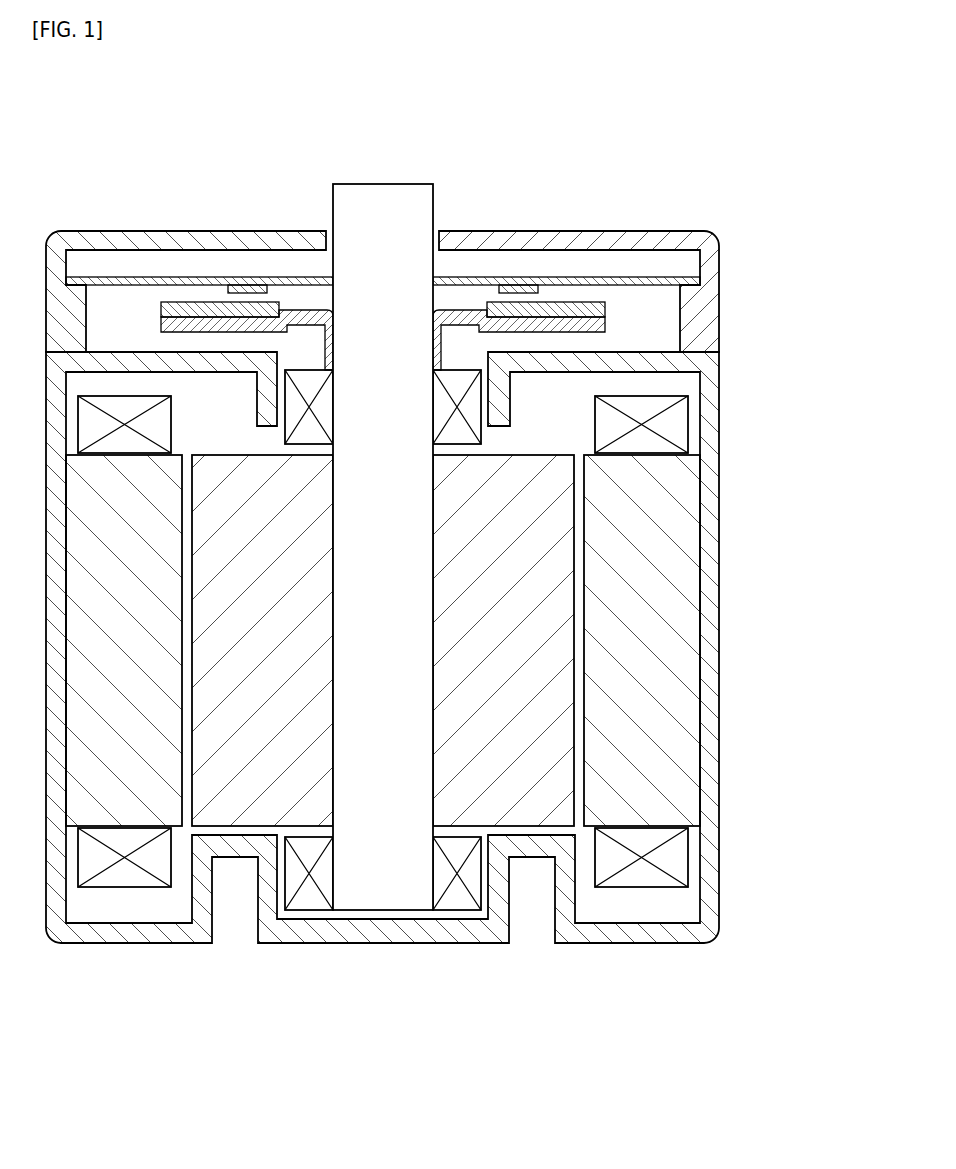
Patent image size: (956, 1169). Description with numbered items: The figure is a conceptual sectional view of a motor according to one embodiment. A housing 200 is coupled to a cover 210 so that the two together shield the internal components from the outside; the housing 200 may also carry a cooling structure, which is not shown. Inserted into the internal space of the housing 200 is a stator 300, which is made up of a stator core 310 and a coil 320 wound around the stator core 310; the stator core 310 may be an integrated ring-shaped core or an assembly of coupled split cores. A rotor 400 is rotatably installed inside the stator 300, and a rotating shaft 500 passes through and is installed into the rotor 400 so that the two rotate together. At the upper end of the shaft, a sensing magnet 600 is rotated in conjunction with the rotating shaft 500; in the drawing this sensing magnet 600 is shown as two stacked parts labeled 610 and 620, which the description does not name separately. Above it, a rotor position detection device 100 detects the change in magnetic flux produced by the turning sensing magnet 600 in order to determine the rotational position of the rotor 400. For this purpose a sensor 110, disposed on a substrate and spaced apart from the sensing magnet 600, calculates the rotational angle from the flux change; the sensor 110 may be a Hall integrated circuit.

The rotor position detection device 100 is at (675, 275).
The sensor 110 is at (525, 288).
The housing 200 is at (712, 593).
The cover 210 is at (713, 303).
The stator 300 is at (452, 641).
The stator core 310 is at (680, 502).
The coil 320 is at (790, 522).
The rotor 400 is at (527, 656).
The rotating shaft 500 is at (387, 876).
The sensing magnet 600 is at (372, 256).
The upper holder plate 610 is at (217, 313).
The lower holder plate 620 is at (180, 328).